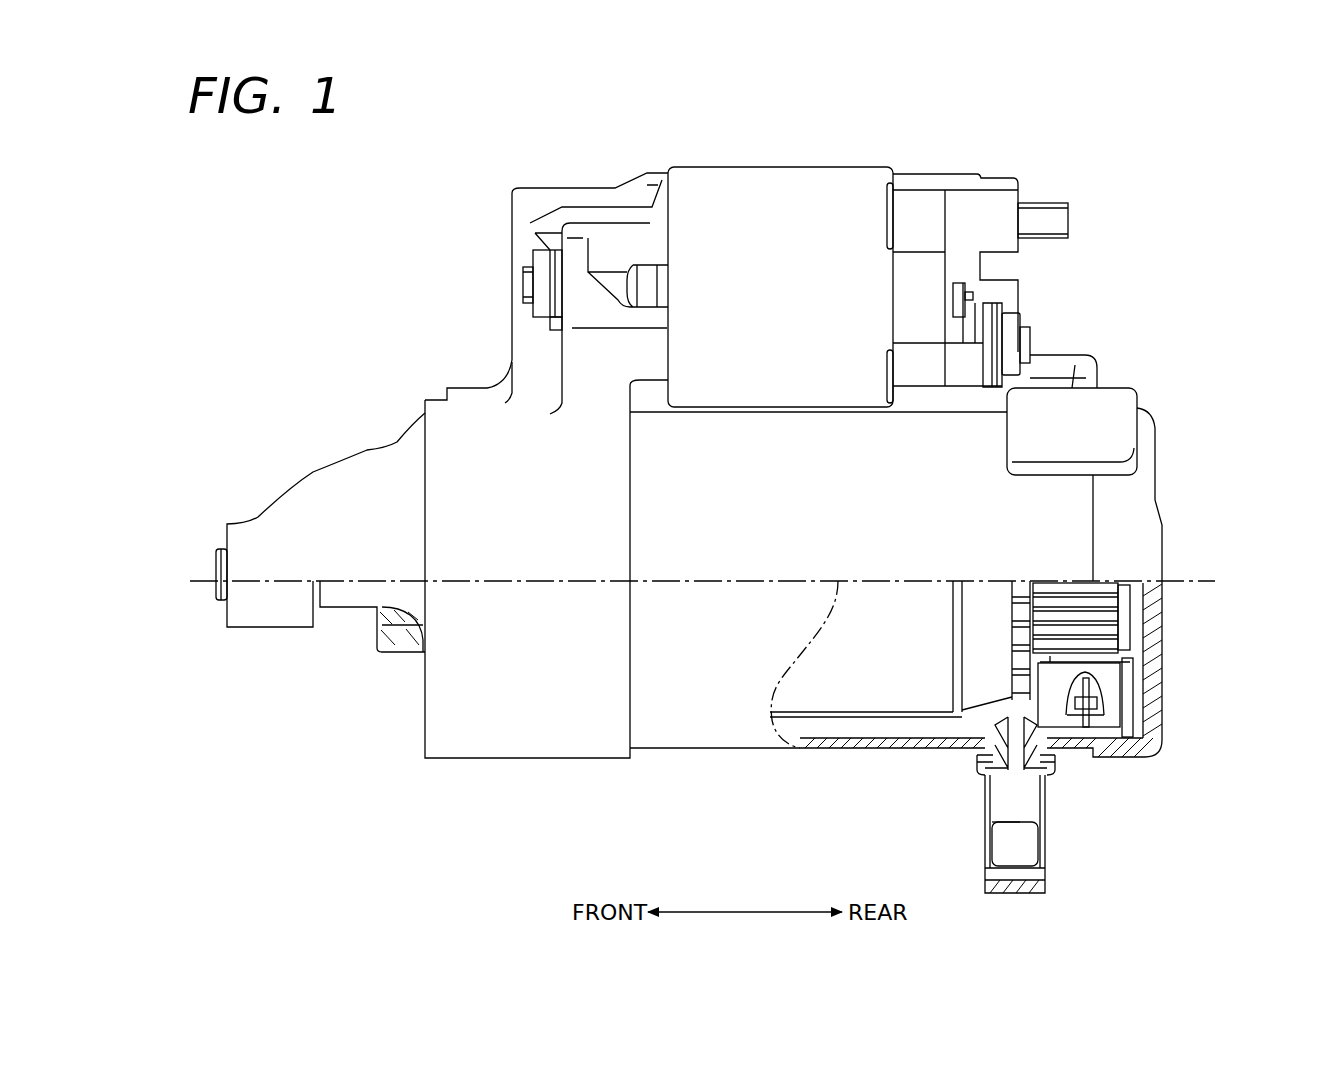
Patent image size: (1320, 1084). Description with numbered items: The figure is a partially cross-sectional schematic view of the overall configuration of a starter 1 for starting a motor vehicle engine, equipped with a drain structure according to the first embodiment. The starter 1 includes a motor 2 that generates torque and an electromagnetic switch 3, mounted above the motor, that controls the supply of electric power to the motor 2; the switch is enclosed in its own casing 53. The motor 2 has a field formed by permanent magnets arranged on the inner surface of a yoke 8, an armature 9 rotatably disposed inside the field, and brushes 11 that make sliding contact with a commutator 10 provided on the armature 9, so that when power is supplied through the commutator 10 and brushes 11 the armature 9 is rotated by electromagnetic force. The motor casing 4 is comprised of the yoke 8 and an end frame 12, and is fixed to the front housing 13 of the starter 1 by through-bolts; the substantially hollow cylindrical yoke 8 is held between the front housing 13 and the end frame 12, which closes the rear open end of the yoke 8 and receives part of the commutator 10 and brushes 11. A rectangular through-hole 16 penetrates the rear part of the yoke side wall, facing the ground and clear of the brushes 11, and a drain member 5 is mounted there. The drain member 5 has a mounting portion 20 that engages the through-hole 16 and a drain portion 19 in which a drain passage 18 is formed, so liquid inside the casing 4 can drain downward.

The starter 1 is at (482, 175).
The motor 2 is at (695, 768).
The electromagnetic switch 3 is at (797, 186).
The casing 4 is at (823, 748).
The drain member 5 is at (1055, 866).
The yoke 8 is at (850, 748).
The armature 9 is at (900, 682).
The commutator 10 is at (1092, 618).
The brushes 11 is at (1105, 722).
The end frame 12 is at (1150, 678).
The front housing 13 is at (523, 737).
The through-hole 16 is at (1050, 766).
The drain passage 18 is at (1027, 832).
The drain portion 19 is at (985, 845).
The mounting portion 20 is at (990, 725).
The casing 53 is at (843, 198).